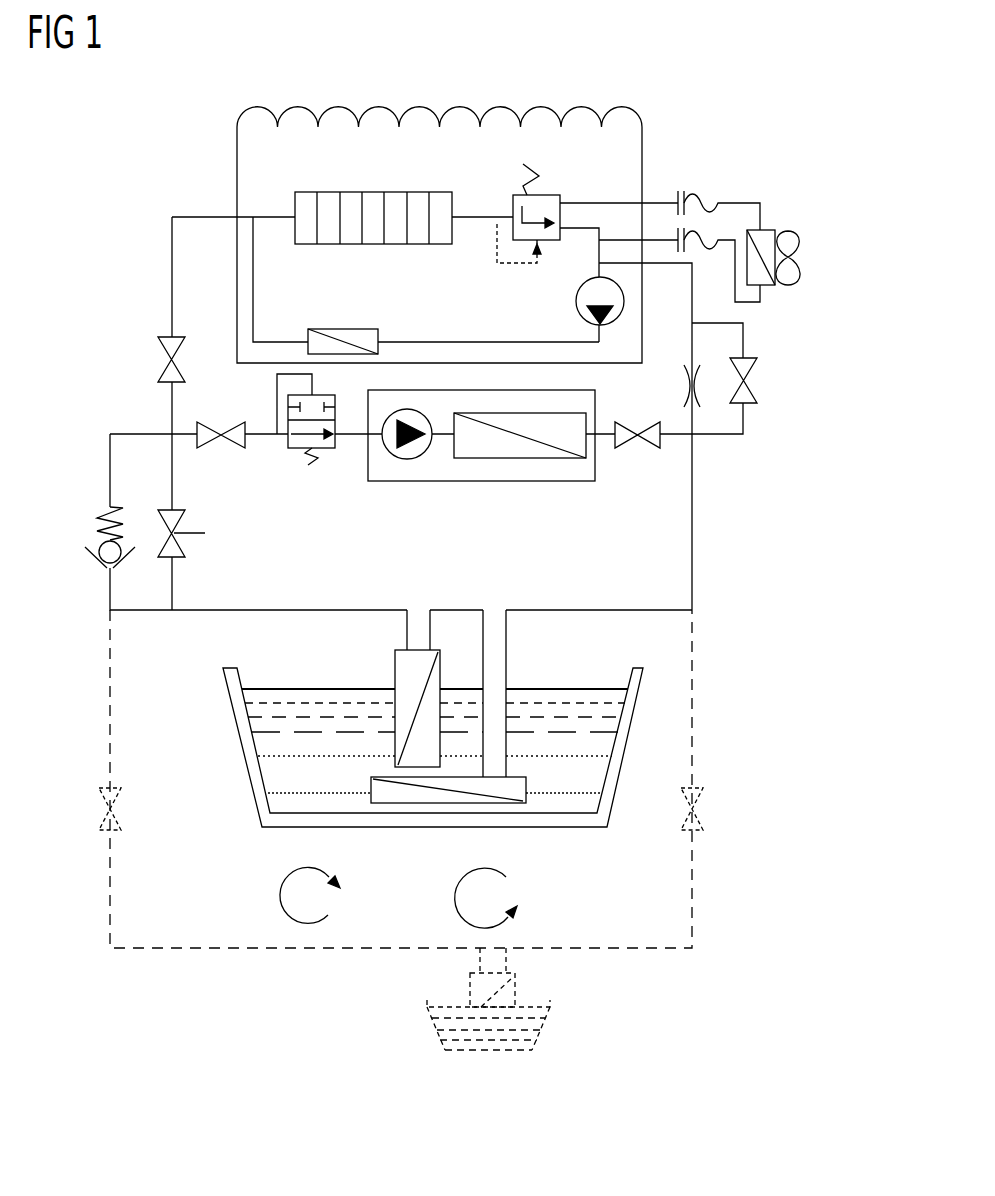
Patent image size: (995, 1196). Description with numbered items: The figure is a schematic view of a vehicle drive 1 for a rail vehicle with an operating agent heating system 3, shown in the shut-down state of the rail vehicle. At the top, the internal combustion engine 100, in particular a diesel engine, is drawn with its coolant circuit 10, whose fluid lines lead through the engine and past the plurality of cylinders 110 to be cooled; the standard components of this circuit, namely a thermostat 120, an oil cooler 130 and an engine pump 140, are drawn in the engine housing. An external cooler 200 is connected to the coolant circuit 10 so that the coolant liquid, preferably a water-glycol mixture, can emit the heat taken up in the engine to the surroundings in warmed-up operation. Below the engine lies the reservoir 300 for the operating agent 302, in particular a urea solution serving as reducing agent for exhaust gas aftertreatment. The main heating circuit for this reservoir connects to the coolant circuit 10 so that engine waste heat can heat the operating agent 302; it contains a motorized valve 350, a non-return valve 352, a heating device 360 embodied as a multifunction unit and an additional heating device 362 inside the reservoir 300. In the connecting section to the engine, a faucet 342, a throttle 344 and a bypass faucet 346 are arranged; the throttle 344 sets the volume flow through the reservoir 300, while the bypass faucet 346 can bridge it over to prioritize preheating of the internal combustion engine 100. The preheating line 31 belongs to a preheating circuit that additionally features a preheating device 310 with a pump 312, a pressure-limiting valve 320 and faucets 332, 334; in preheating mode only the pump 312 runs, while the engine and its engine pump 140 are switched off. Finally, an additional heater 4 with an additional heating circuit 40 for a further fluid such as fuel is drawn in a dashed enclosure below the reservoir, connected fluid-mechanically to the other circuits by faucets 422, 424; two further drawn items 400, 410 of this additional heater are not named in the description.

The vehicle drive 1 is at (680, 82).
The operating agent heating system 3 is at (96, 468).
The additional heater 4 is at (236, 977).
The coolant circuit 10 is at (478, 216).
The preheating line 31 is at (350, 437).
The additional heating circuit 40 is at (297, 908).
The internal combustion engine 100 is at (643, 137).
The cylinders 110 is at (333, 192).
The thermostat 120 is at (545, 195).
The oil cooler 130 is at (338, 329).
The engine pump 140 is at (575, 300).
The external cooler 200 is at (764, 228).
The reservoir 300 is at (228, 730).
The operating agent 302 is at (285, 695).
The preheating device 310 is at (511, 482).
The pump 312 is at (409, 460).
The pressure-limiting valve 320 is at (303, 452).
The faucet 332 is at (215, 448).
The faucet 334 is at (636, 448).
The faucet 342 is at (158, 352).
The throttle 344 is at (684, 385).
The bypass faucet 346 is at (757, 382).
The motorized valve 350 is at (185, 548).
The non-return valve 352 is at (88, 545).
The heating device 360 is at (395, 672).
The additional heating device 362 is at (432, 805).
The collecting tank 400 is at (427, 1030).
The drain valve 410 is at (527, 989).
The faucet 422 is at (125, 812).
The faucet 424 is at (708, 812).